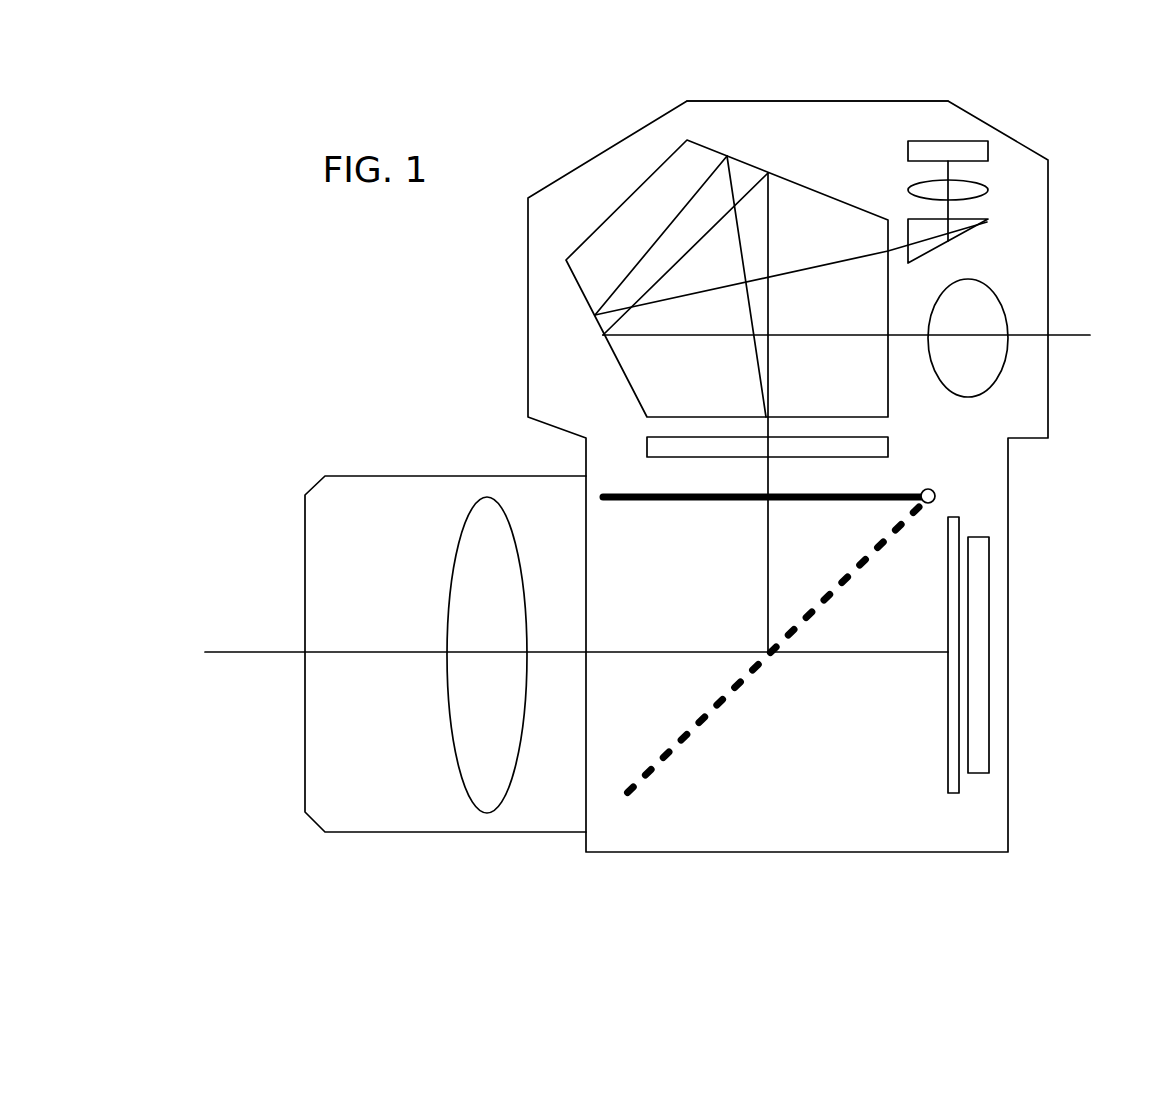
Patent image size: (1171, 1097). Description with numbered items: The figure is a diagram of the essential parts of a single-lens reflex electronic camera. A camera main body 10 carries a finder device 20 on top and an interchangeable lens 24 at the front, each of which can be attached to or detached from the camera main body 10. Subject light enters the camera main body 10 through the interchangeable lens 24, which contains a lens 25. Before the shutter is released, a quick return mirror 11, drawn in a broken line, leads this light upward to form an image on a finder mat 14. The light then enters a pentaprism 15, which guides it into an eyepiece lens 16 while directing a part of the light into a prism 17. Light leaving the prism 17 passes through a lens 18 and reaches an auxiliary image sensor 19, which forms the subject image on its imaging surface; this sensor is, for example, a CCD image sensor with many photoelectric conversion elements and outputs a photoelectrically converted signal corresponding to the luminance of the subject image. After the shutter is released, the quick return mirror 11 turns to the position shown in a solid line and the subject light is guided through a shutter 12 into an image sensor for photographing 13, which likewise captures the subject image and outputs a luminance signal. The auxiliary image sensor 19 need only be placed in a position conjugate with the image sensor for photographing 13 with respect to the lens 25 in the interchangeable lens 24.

The camera main body 10 is at (707, 852).
The quick return mirror 11 is at (688, 733).
The shutter 12 is at (959, 517).
The image sensor for photographing 13 is at (980, 673).
The finder mat 14 is at (888, 443).
The pentaprism 15 is at (807, 220).
The eyepiece lens 16 is at (988, 358).
The prism 17 is at (965, 230).
The lens 18 is at (972, 192).
The auxiliary image sensor 19 is at (970, 152).
The finder device 20 is at (747, 101).
The interchangeable lens 24 is at (505, 832).
The lens 25 is at (472, 802).